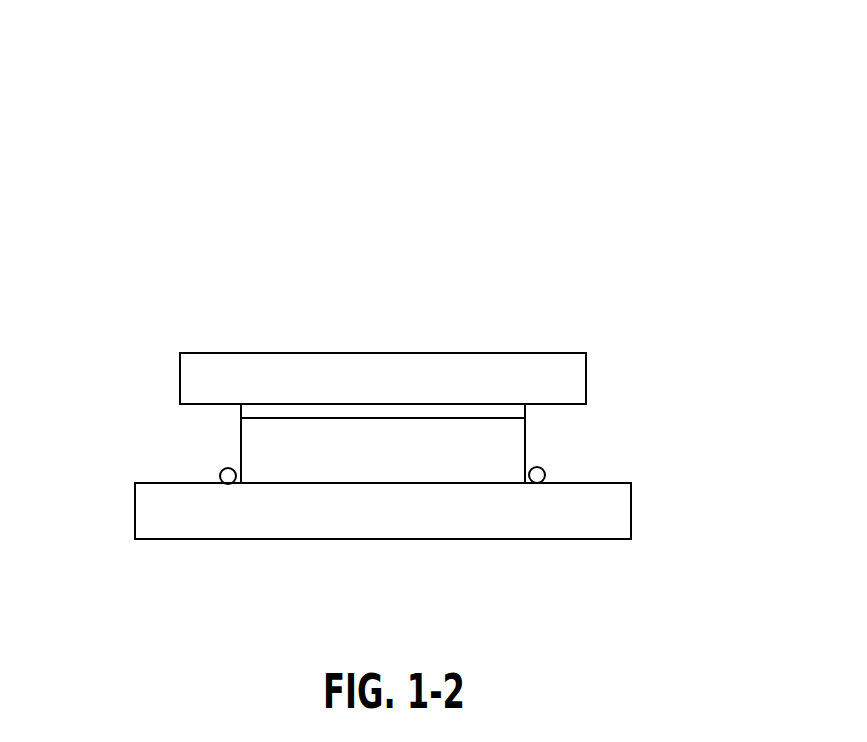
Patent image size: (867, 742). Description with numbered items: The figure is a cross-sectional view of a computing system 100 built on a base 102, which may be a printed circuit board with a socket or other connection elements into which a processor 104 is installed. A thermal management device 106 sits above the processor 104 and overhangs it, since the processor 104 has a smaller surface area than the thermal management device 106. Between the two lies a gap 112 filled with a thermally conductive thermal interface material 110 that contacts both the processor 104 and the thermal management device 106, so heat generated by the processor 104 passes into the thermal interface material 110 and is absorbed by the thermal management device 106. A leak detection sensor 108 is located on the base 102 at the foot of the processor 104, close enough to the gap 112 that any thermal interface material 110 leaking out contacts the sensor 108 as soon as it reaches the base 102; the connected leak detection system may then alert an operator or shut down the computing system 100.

The computing system 100 is at (724, 72).
The base 102 is at (610, 278).
The processor 104 is at (453, 449).
The thermal management device 106 is at (567, 363).
The leak detection sensor 108 is at (222, 473).
The thermal interface material 110 is at (240, 411).
The gap 112 is at (526, 411).